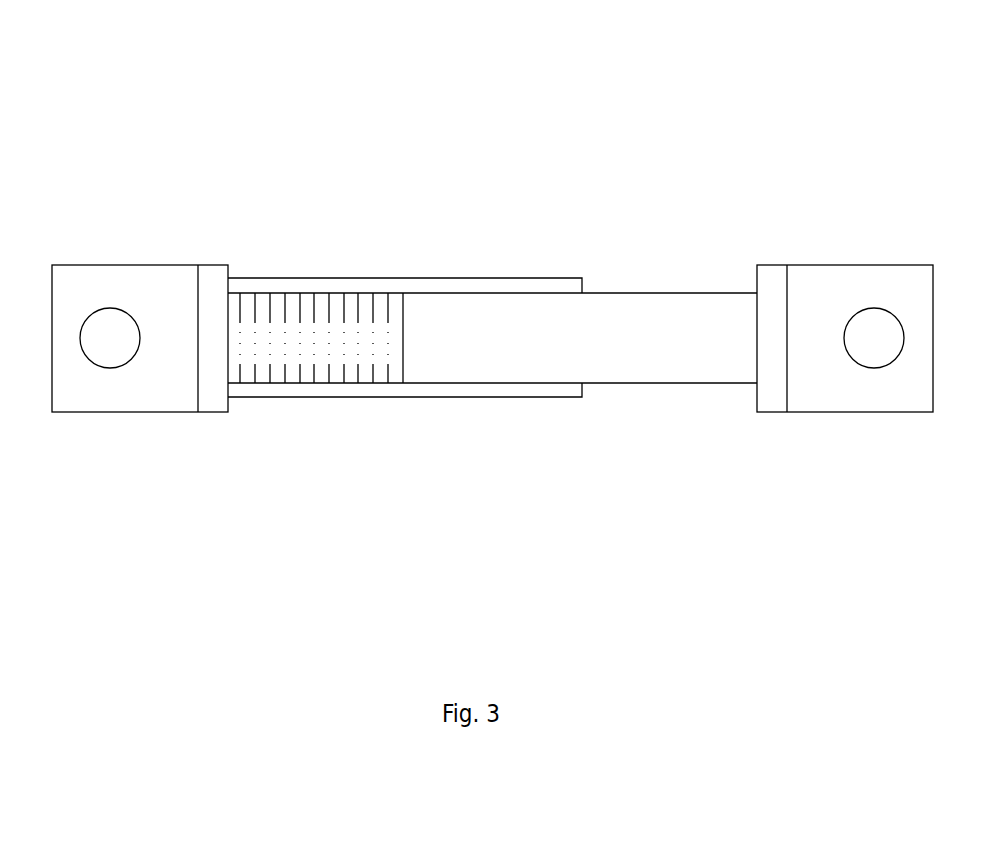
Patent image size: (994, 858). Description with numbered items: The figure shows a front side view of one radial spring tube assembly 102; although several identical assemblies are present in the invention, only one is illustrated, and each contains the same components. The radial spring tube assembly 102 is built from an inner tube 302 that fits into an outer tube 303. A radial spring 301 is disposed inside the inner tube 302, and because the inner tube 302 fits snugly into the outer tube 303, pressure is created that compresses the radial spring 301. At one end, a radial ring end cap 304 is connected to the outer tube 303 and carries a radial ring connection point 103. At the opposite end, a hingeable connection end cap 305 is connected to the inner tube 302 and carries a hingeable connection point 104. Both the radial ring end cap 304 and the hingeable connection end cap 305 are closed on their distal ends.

The radial spring tube assembly 102 is at (428, 133).
The radial ring connection point 103 is at (107, 347).
The hingeable connection point 104 is at (874, 340).
The radial spring 301 is at (313, 343).
The inner tube 302 is at (522, 345).
The outer tube 303 is at (393, 287).
The radial ring end cap 304 is at (127, 400).
The hingeable connection end cap 305 is at (808, 293).